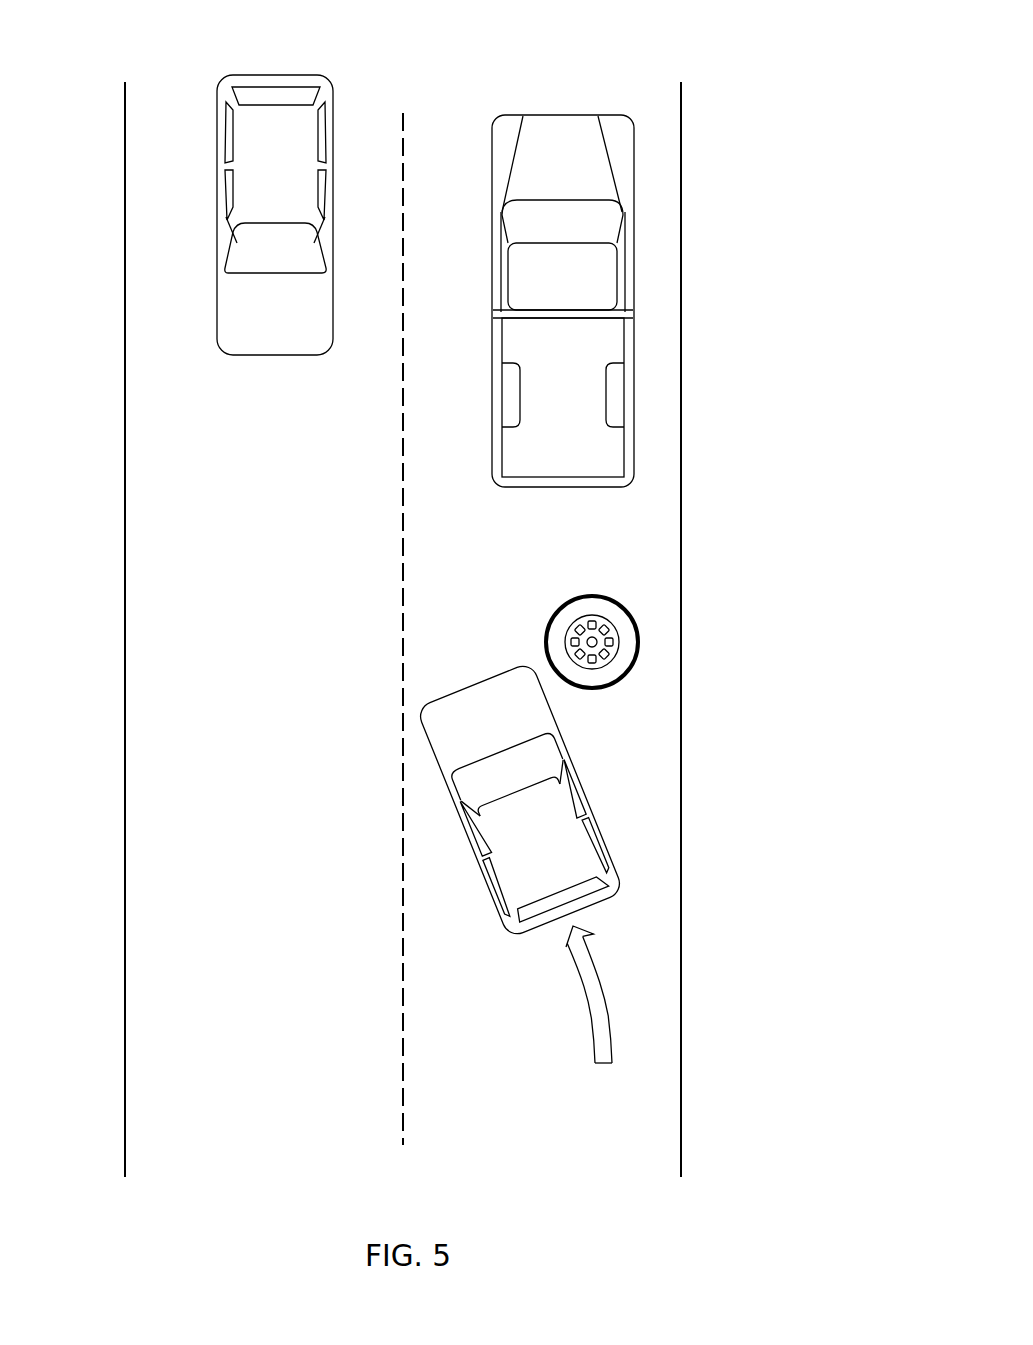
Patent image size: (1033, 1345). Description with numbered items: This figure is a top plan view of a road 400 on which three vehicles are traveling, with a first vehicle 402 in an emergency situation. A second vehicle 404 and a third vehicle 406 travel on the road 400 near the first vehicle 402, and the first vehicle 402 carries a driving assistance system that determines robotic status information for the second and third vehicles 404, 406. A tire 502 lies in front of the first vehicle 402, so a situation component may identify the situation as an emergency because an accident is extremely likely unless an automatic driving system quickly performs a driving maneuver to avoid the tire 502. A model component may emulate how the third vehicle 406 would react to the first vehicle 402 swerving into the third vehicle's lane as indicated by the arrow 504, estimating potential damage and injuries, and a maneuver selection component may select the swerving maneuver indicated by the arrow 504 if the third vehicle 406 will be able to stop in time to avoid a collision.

The road 400 is at (681, 45).
The first vehicle 402 is at (564, 851).
The second vehicle 404 is at (579, 284).
The third vehicle 406 is at (293, 177).
The tire 502 is at (636, 622).
The arrow 504 is at (611, 1038).